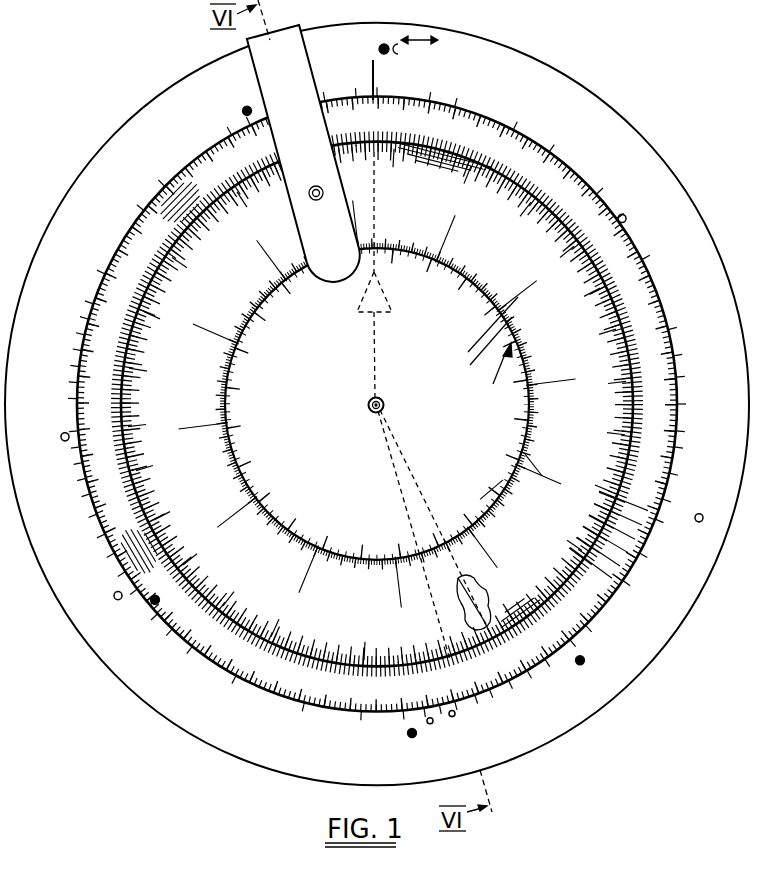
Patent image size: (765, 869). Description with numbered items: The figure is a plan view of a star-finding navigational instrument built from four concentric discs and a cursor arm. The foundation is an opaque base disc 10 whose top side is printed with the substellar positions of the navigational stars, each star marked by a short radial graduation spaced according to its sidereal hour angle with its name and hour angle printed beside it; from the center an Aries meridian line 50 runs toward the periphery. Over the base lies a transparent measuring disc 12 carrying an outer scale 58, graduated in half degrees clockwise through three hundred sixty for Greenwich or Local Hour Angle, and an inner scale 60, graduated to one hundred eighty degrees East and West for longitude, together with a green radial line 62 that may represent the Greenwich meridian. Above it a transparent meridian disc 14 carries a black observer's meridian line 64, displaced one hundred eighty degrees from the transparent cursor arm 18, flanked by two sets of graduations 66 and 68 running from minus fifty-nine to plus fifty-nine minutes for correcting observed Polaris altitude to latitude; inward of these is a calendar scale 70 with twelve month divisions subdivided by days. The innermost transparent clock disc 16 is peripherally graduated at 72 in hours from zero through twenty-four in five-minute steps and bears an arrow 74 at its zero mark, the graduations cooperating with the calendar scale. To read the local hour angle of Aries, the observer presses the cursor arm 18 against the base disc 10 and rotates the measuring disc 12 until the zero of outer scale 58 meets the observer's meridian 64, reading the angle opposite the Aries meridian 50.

The base disc 10 is at (590, 110).
The measuring disc 12 is at (573, 170).
The meridian disc 14 is at (394, 404).
The clock disc 16 is at (507, 323).
The cursor arm 18 is at (240, 40).
The Aries meridian line 50 is at (373, 78).
The outer scale 58 is at (130, 231).
The inner scale 60 is at (113, 257).
The radial line 62 is at (480, 588).
The observer's meridian line 64 is at (397, 476).
The graduations 66 is at (163, 593).
The graduations 68 is at (607, 587).
The calendar scale 70 is at (535, 460).
The hour graduations 72 is at (507, 462).
The arrow 74 is at (499, 388).